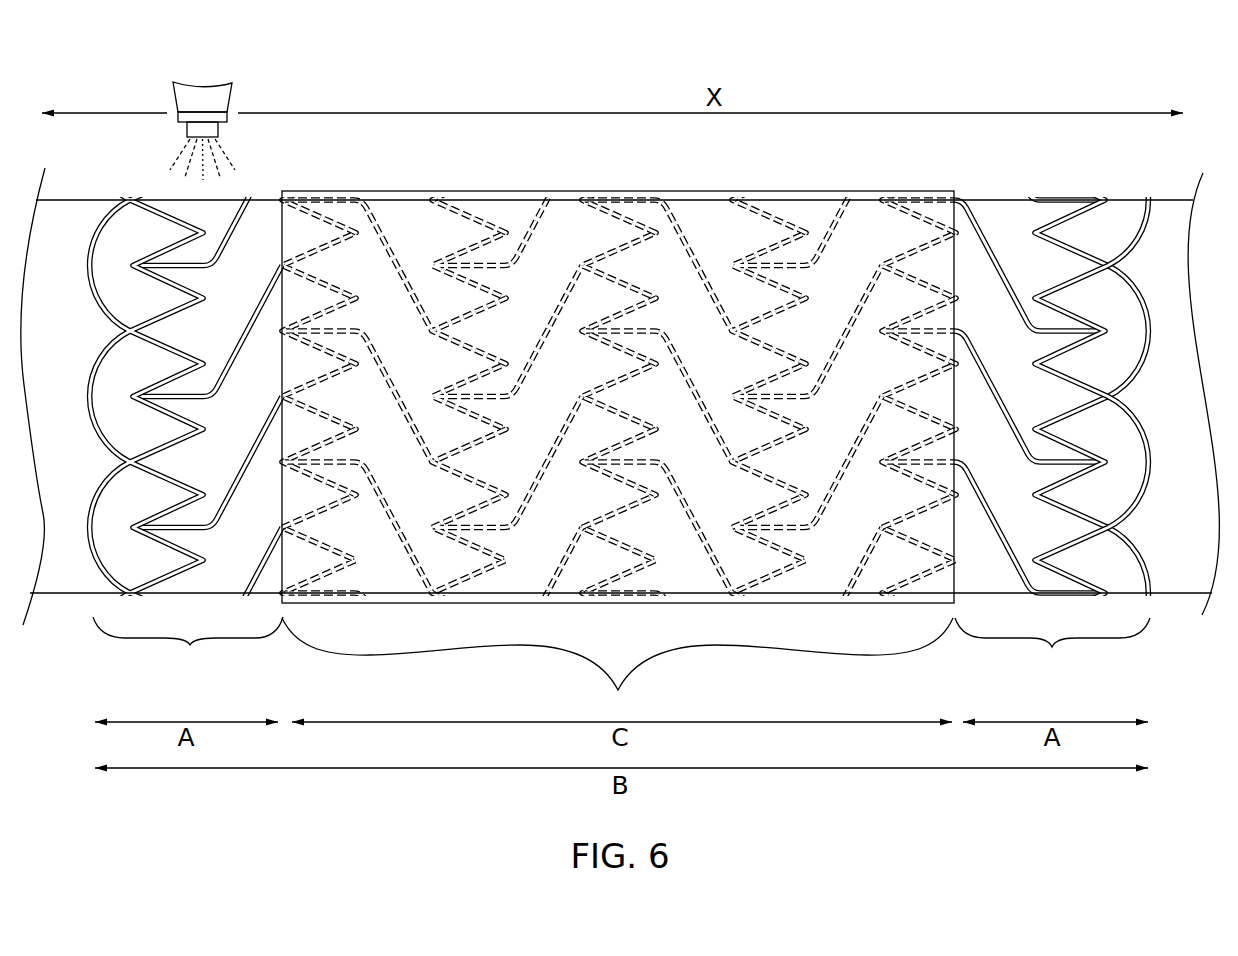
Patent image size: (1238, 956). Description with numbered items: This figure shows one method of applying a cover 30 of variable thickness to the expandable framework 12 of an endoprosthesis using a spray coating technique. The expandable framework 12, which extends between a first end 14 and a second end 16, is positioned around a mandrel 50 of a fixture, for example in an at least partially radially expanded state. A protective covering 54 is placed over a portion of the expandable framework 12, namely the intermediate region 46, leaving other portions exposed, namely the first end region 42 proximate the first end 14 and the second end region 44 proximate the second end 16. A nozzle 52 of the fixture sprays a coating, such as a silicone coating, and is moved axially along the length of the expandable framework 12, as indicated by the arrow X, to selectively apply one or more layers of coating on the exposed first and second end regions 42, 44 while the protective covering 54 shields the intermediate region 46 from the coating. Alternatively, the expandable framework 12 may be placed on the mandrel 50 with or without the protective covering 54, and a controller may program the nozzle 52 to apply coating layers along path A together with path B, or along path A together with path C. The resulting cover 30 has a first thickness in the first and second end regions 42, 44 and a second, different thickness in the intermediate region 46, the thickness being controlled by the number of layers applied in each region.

The expandable tubular framework 12 is at (1132, 397).
The first end 14 is at (79, 220).
The second end 16 is at (1152, 543).
The cover 30 is at (259, 210).
The first end region 42 is at (188, 647).
The second end region 44 is at (1052, 649).
The intermediate region 46 is at (617, 669).
The mandrel 50 is at (1157, 267).
The nozzle 52 is at (187, 83).
The protective covering 54 is at (620, 191).